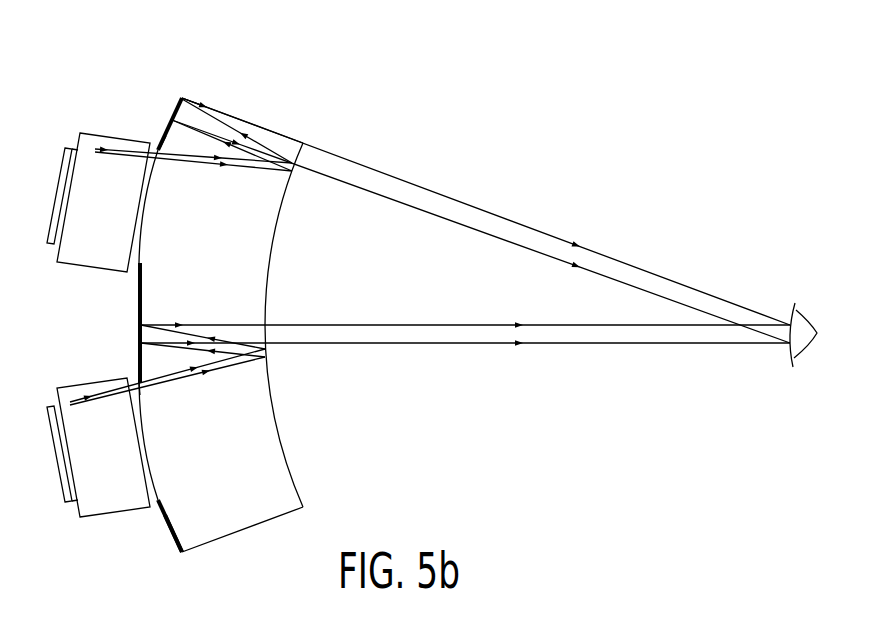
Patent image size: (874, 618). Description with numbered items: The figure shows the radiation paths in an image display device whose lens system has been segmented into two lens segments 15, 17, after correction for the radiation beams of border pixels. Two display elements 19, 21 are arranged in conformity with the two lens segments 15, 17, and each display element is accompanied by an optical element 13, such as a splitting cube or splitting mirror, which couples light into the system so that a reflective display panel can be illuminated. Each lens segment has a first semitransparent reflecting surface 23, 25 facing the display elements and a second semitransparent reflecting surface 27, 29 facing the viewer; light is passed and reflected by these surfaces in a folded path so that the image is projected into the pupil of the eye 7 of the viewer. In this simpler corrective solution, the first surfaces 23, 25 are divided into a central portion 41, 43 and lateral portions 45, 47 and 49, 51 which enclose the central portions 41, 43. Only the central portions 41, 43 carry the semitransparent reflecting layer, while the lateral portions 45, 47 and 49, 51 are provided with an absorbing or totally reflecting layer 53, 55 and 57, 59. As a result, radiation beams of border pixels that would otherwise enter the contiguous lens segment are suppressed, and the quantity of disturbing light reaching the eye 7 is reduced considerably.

The eye 7 is at (802, 335).
The optical element 13 is at (92, 140).
The lens segment 15 is at (185, 94).
The lens segment 17 is at (273, 510).
The display element 19 is at (61, 168).
The display element 21 is at (63, 496).
The first semitransparent reflecting surface 23 is at (135, 280).
The first semitransparent reflecting surface 25 is at (172, 546).
The second semitransparent reflecting surface 27 is at (273, 247).
The second semitransparent reflecting surface 29 is at (279, 436).
The central portion 41 is at (142, 224).
The central portion 43 is at (146, 452).
The lateral portion 45 is at (180, 533).
The lateral portion 47 is at (142, 371).
The lateral portion 49 is at (143, 277).
The lateral portion 51 is at (165, 140).
The absorbing or totally reflecting layer 53 is at (168, 523).
The absorbing or totally reflecting layer 55 is at (140, 353).
The absorbing or totally reflecting layer 57 is at (140, 313).
The absorbing or totally reflecting layer 59 is at (173, 107).